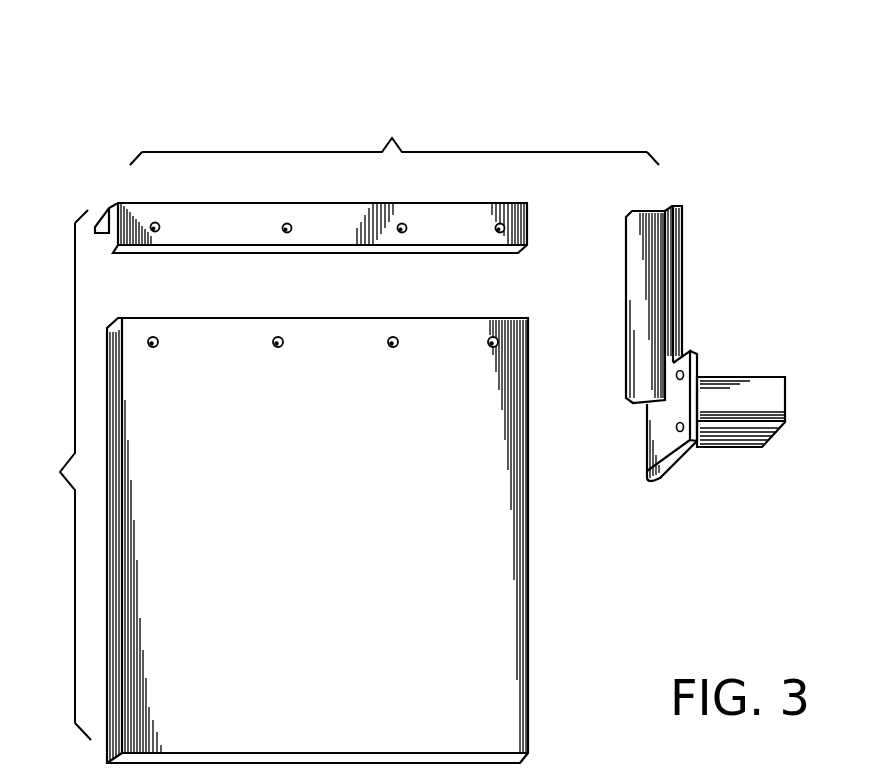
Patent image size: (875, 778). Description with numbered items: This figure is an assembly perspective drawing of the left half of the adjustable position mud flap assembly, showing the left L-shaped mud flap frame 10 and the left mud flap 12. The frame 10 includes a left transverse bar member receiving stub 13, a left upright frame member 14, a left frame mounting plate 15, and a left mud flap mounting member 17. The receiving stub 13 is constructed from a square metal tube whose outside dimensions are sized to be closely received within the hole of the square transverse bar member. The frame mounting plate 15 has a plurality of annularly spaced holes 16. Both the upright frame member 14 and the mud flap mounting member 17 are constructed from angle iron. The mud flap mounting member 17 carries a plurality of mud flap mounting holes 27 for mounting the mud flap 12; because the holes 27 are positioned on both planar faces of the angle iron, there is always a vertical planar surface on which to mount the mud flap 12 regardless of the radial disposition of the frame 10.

The left L-shaped mud flap frame 10 is at (584, 62).
The left mud flap 12 is at (294, 459).
The left transverse bar member receiving stub 13 is at (787, 392).
The left upright frame member 14 is at (625, 317).
The left frame mounting plate 15 is at (675, 363).
The annularly spaced holes 16 is at (678, 428).
The left mud flap mounting member 17 is at (204, 238).
The mud flap mounting holes 27 is at (155, 222).